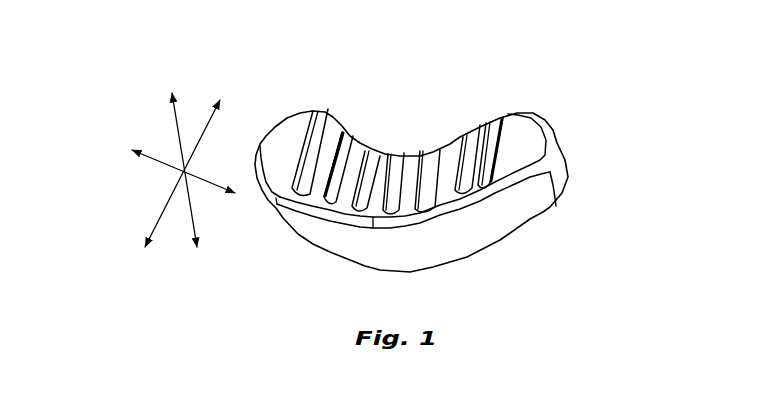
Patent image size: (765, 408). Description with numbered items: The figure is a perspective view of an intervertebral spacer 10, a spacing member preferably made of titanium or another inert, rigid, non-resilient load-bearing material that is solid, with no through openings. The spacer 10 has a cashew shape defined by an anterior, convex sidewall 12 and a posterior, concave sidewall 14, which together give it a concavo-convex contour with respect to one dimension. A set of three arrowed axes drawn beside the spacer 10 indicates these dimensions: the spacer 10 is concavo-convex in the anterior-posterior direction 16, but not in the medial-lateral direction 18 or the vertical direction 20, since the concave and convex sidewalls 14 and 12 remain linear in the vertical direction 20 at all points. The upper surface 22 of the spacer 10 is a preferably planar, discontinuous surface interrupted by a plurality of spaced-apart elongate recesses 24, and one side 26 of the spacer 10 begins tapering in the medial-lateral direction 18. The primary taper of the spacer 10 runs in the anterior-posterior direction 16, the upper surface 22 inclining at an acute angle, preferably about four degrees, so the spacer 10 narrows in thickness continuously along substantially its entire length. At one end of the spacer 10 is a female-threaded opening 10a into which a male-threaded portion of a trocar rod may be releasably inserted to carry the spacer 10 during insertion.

The intervertebral spacer 10 is at (492, 62).
The female-threaded opening 10a is at (570, 157).
The anterior convex sidewall 12 is at (463, 235).
The posterior concave sidewall 14 is at (364, 118).
The anterior-posterior direction 16 is at (160, 213).
The medial-lateral direction 18 is at (158, 157).
The vertical direction 20 is at (175, 127).
The upper surface 22 is at (322, 110).
The elongate recesses 24 is at (446, 158).
The side of the spacer 26 is at (289, 133).